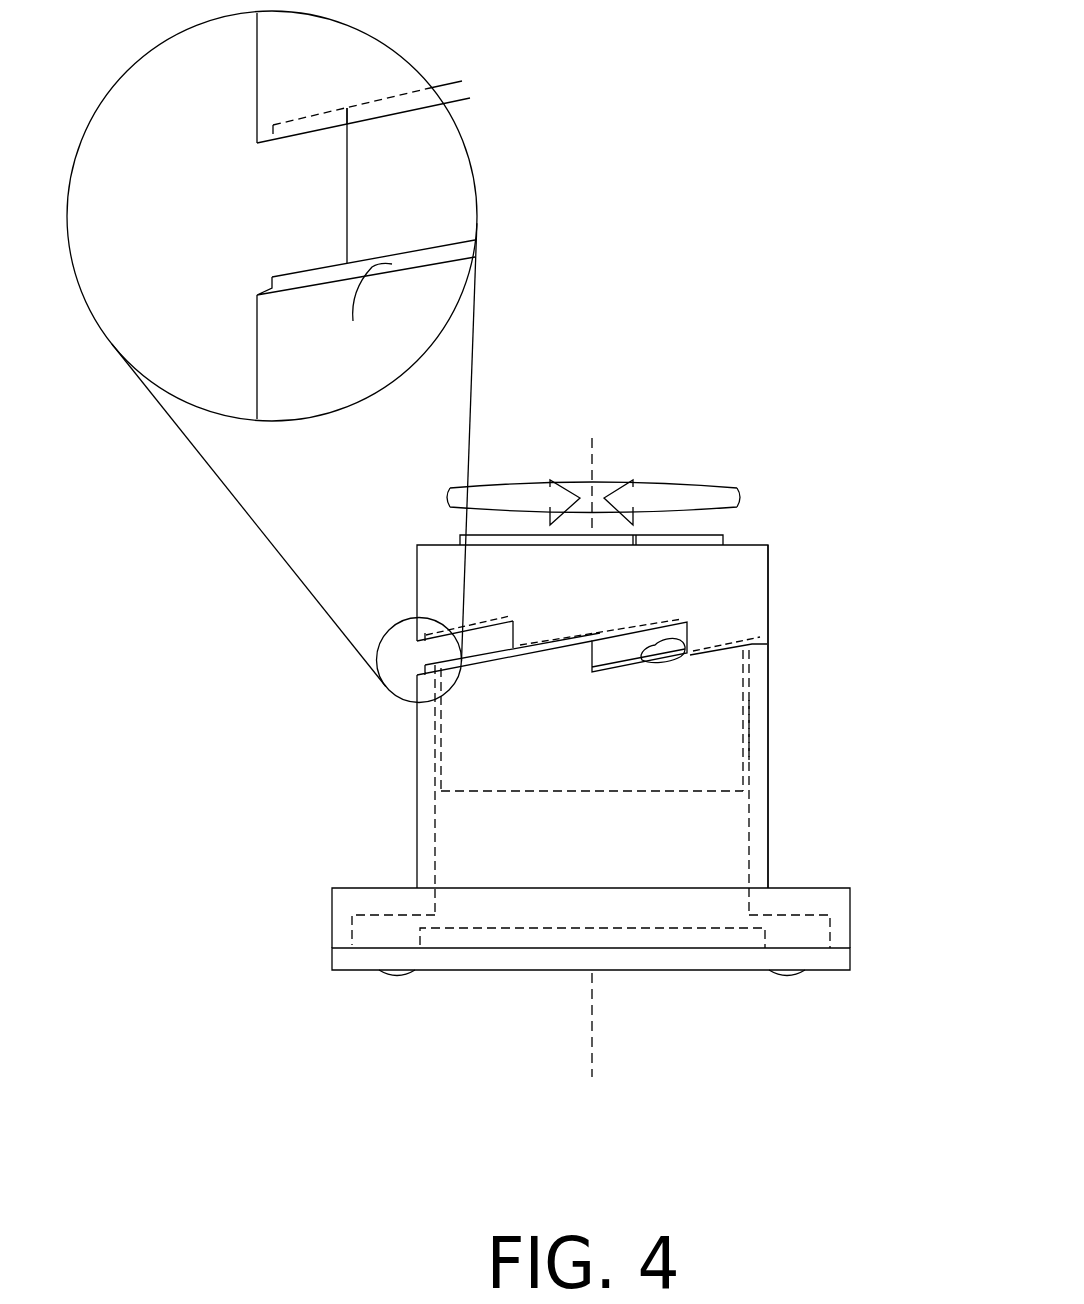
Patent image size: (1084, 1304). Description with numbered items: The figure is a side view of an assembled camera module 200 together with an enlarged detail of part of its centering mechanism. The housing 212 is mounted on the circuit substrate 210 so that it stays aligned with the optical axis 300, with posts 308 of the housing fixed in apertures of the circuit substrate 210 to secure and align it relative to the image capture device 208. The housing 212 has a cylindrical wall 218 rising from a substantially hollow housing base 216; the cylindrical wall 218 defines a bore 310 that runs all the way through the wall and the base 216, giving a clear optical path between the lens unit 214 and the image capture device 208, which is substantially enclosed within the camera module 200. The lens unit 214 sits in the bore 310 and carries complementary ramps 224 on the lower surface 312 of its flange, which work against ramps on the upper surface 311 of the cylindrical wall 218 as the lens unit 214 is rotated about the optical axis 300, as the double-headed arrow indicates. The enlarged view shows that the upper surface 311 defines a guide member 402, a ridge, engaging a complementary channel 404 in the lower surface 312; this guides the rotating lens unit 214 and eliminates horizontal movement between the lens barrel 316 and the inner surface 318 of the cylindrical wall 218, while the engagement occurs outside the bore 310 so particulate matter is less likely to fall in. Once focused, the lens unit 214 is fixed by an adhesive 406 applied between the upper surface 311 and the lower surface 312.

The camera module 200 is at (851, 463).
The image capture device 208 is at (683, 940).
The circuit substrate 210 is at (743, 565).
The housing 212 is at (765, 822).
The lens unit 214 is at (283, 64).
The housing base 216 is at (330, 922).
The cylindrical wall 218 is at (257, 362).
The complementary ramps 224 is at (543, 634).
The optical axis 300 is at (593, 737).
The posts 308 is at (396, 975).
The bore 310 is at (613, 863).
The upper surface 311 is at (359, 310).
The lower surface 312 is at (370, 120).
The lens barrel 316 is at (347, 227).
The inner surface 318 is at (752, 738).
The guide member 402 is at (272, 283).
The channel 404 is at (257, 133).
The adhesive 406 is at (660, 668).